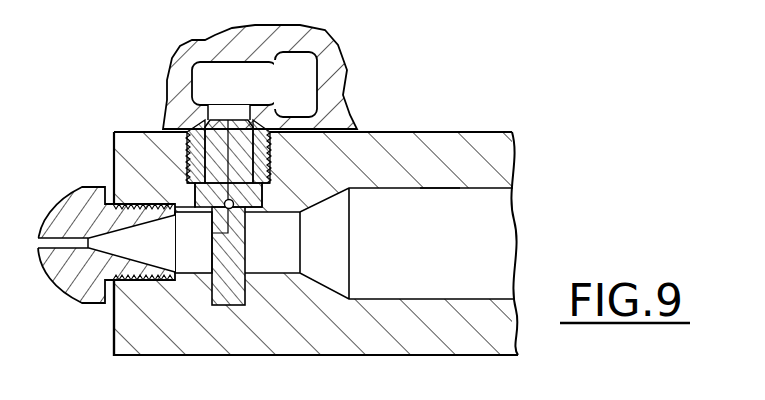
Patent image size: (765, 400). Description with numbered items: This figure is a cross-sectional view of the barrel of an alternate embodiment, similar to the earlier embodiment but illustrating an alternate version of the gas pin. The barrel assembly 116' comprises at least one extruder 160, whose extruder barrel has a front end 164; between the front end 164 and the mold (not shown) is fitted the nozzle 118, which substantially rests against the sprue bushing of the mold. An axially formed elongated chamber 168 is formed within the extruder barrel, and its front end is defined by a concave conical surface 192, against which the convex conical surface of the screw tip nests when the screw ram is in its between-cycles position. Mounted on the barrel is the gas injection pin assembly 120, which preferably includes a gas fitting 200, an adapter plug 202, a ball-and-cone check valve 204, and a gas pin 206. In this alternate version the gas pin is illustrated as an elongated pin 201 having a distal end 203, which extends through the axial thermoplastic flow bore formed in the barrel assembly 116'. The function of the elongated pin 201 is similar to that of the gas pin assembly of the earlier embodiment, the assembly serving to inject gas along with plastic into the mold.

The barrel assembly 116' is at (494, 59).
The nozzle 118 is at (82, 302).
The gas injection pin assembly 120 is at (320, 63).
The extruder 160 is at (432, 366).
The front end 164 is at (368, 137).
The elongated chamber 168 is at (441, 192).
The concave conical surface 192 is at (320, 278).
The gas fitting 200 is at (287, 57).
The gas pin 201 is at (232, 297).
The adapter plug 202 is at (187, 152).
The distal end 203 is at (210, 282).
The check valve 204 is at (193, 208).
The gas pin 206 is at (177, 343).